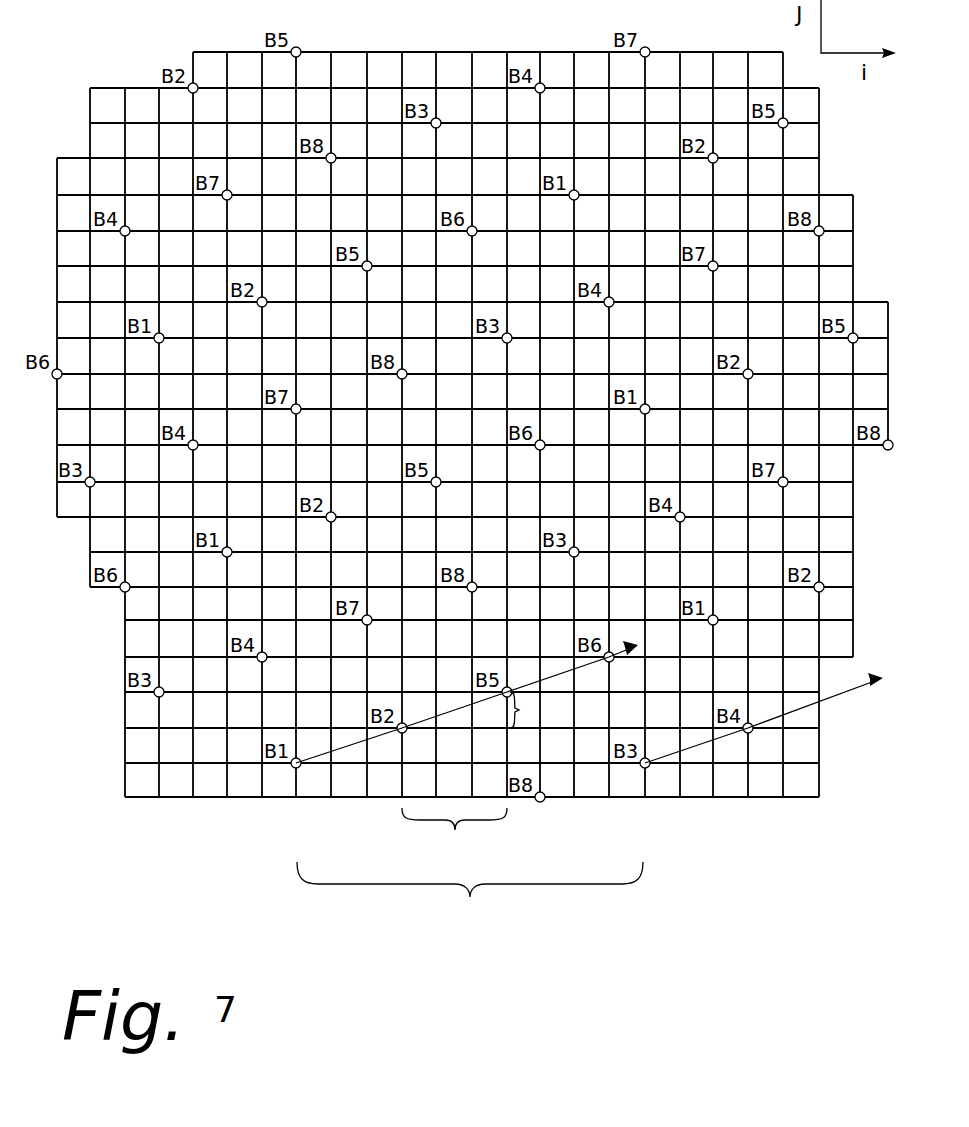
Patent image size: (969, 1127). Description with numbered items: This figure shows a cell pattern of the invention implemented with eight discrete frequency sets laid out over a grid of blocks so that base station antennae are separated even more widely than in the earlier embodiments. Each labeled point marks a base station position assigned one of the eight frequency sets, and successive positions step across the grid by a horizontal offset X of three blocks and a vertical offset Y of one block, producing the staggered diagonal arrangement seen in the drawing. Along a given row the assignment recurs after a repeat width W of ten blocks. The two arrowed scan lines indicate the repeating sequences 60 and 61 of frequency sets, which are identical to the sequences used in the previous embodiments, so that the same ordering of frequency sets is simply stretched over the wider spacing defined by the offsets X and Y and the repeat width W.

The repeating sequence 60 is at (349, 760).
The repeating sequence 61 is at (694, 760).
The horizontal block offset X is at (454, 835).
The vertical block offset Y is at (522, 710).
The repeat width W is at (470, 897).